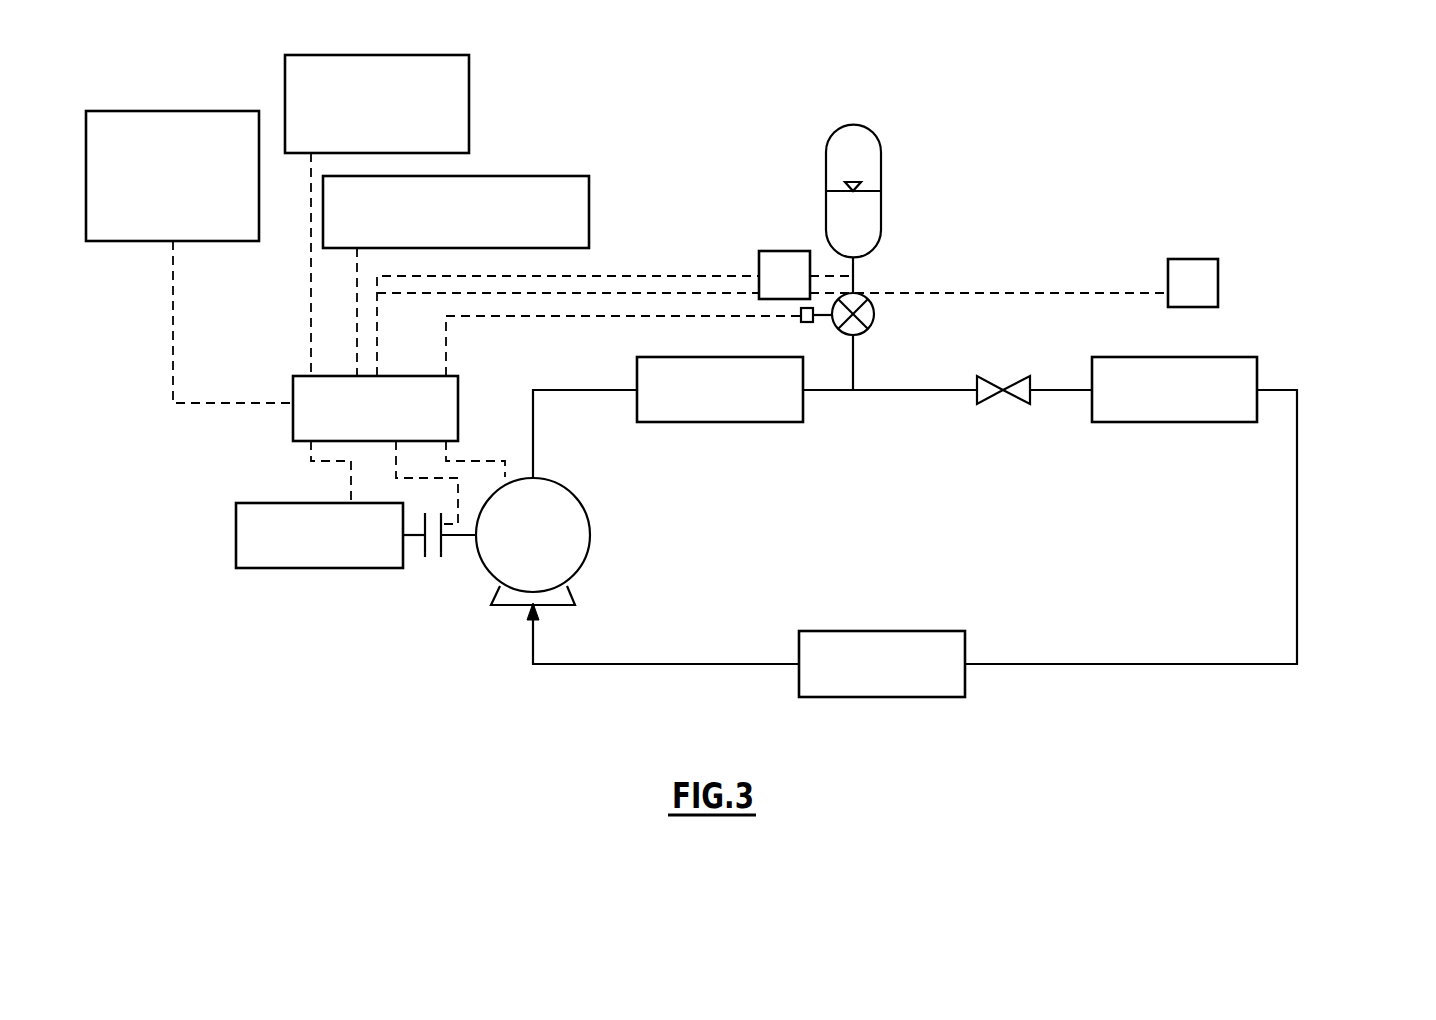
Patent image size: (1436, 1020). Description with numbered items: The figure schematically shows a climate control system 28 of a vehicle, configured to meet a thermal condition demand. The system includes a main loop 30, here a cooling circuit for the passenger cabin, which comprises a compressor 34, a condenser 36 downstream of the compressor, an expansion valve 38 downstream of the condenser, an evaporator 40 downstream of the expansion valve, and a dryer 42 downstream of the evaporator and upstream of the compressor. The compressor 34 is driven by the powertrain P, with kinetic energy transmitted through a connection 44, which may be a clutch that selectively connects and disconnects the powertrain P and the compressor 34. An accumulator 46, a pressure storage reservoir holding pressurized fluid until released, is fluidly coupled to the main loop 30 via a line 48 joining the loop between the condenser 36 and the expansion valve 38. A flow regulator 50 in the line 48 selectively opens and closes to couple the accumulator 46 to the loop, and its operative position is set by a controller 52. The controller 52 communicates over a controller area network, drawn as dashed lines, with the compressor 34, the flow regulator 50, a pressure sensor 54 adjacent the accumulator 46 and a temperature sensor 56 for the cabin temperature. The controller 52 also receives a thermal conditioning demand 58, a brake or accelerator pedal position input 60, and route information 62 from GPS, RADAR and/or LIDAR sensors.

The climate control system 28 is at (1325, 270).
The main loop 30 is at (1308, 512).
The compressor 34 is at (590, 535).
The condenser 36 is at (757, 422).
The expansion valve 38 is at (1015, 404).
The evaporator 40 is at (1197, 422).
The dryer 42 is at (918, 697).
The connection 44 is at (428, 565).
The accumulator 46 is at (881, 152).
The line 48 is at (853, 360).
The flow regulator 50 is at (875, 312).
The controller 52 is at (293, 432).
The pressure sensor 54 is at (770, 289).
The temperature sensor 56 is at (1178, 297).
The thermal conditioning demand 58 is at (469, 93).
The brake or accelerator pedal position 60 is at (589, 215).
The route information 62 is at (152, 111).
The powertrain P is at (236, 548).